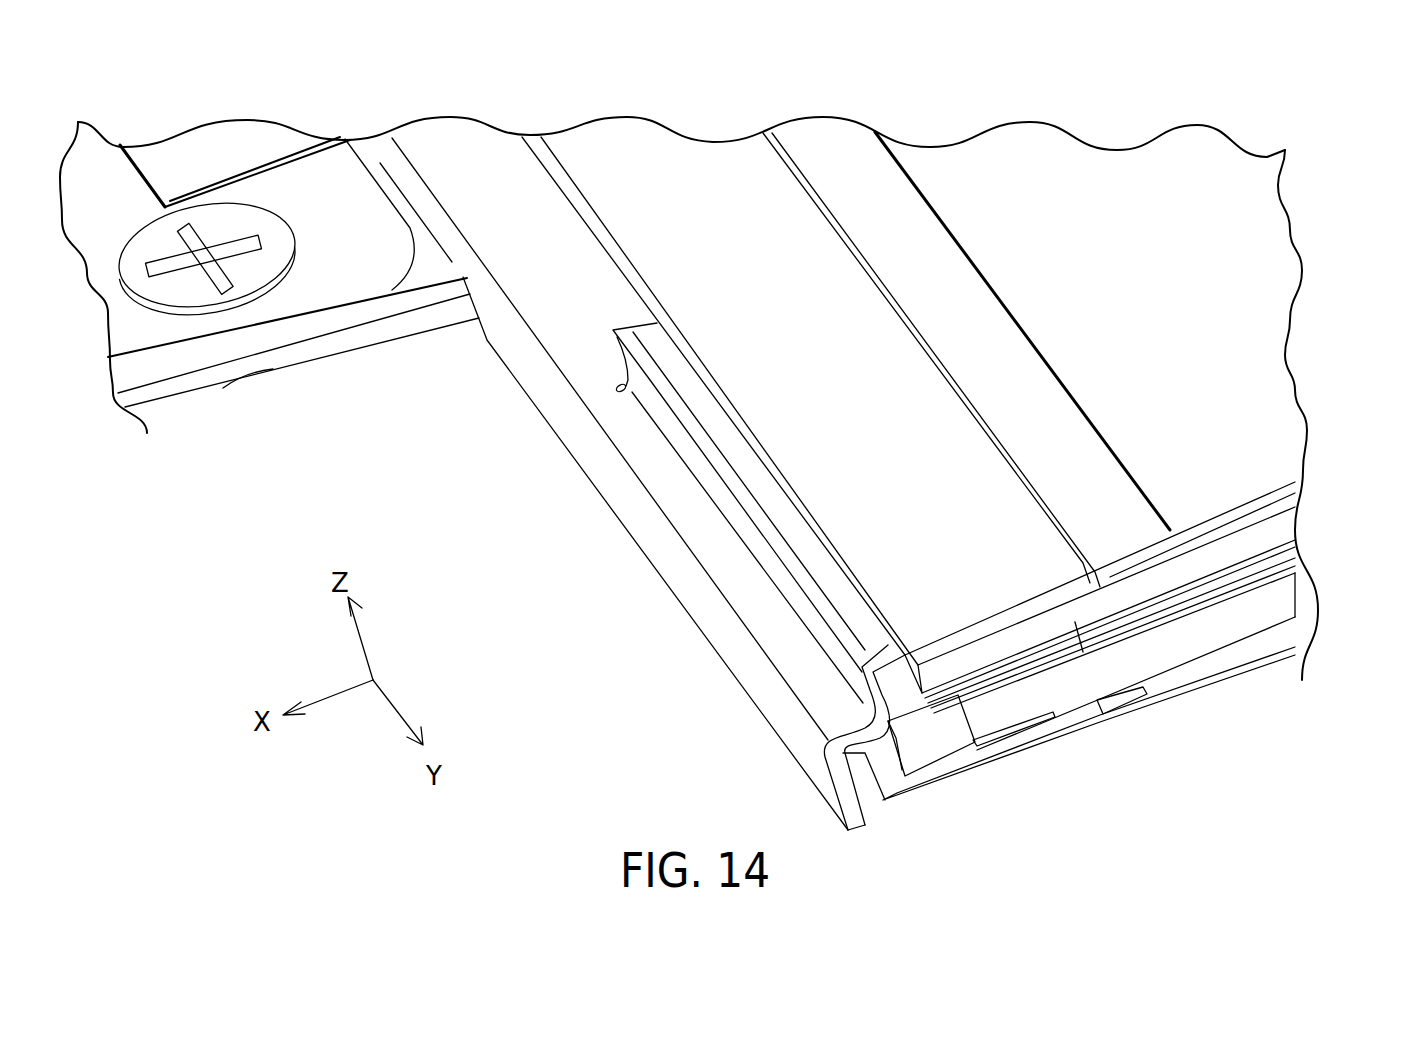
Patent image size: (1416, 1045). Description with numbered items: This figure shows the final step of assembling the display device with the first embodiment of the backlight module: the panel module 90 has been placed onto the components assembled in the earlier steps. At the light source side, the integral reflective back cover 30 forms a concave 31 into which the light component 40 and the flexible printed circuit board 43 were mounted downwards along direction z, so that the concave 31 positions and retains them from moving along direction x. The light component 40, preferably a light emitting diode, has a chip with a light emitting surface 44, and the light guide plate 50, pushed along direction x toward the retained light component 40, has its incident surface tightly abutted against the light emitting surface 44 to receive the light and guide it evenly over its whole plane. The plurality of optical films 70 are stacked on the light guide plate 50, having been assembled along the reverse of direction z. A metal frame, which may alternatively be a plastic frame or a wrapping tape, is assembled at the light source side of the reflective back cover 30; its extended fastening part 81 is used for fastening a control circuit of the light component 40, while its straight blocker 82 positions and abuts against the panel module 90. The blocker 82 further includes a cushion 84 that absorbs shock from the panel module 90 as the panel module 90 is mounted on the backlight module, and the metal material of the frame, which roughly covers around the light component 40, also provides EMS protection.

The reflective back cover 30 is at (1217, 668).
The concave 31 is at (1136, 708).
The light component 40 is at (943, 752).
The flexible printed circuit board 43 is at (1042, 727).
The light emitting surface 44 is at (228, 138).
The light guide plate 50 is at (1305, 597).
The optical films 70 is at (1295, 563).
The fastening part 81 is at (372, 320).
The blocker 82 is at (813, 592).
The cushion 84 is at (763, 485).
The panel module 90 is at (1268, 393).